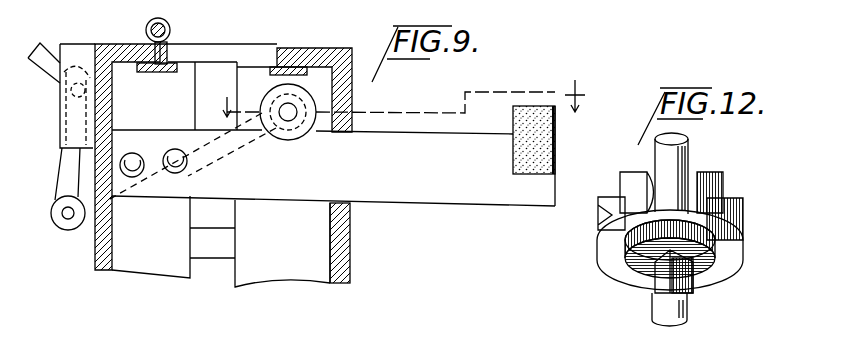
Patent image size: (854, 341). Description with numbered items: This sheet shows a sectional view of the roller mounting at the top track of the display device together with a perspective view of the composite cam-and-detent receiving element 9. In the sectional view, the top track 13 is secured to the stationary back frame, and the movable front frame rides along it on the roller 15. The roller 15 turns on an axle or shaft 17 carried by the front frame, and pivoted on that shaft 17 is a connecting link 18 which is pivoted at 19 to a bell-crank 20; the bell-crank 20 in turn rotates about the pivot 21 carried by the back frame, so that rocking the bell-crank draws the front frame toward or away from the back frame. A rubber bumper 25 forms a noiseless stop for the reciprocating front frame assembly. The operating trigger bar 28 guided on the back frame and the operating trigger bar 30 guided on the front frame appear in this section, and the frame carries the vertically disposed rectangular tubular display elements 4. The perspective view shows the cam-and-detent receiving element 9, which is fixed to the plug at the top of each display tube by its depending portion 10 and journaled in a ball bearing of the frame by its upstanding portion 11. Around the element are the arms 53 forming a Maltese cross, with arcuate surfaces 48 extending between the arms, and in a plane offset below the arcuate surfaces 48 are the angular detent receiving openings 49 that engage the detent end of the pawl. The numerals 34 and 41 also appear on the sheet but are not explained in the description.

In FIG. 9, the pivot 21 is at (61, 80).
In FIG. 9, the bolt head 34 is at (146, 24).
In FIG. 9, the operating trigger bar 28 is at (175, 63).
In FIG. 9, the operating trigger bar 30 is at (292, 67).
In FIG. 9, the roller 15 is at (305, 95).
In FIG. 9, the depending portion 10 is at (405, 99).
In FIG. 12, the depending portion 10 is at (680, 312).
In FIG. 9, the axle or shaft 17 is at (290, 118).
In FIG. 9, the connecting link 18 is at (222, 157).
In FIG. 9, the top track 13 is at (417, 192).
In FIG. 9, the rubber bumper 25 is at (530, 168).
In FIG. 9, the bell-crank 20 is at (55, 190).
In FIG. 9, the pivot 19 is at (68, 219).
In FIG. 9, the tubular display element 4 is at (457, 3).
In FIG. 9, the guide 41 is at (648, 13).
In FIG. 12, the upstanding portion 11 is at (680, 167).
In FIG. 12, the arm 53 is at (720, 217).
In FIG. 12, the angular detent receiving opening 49 is at (733, 232).
In FIG. 12, the composite cam-and-detent receiving element 9 is at (597, 258).
In FIG. 12, the arcuate surface 48 is at (633, 242).